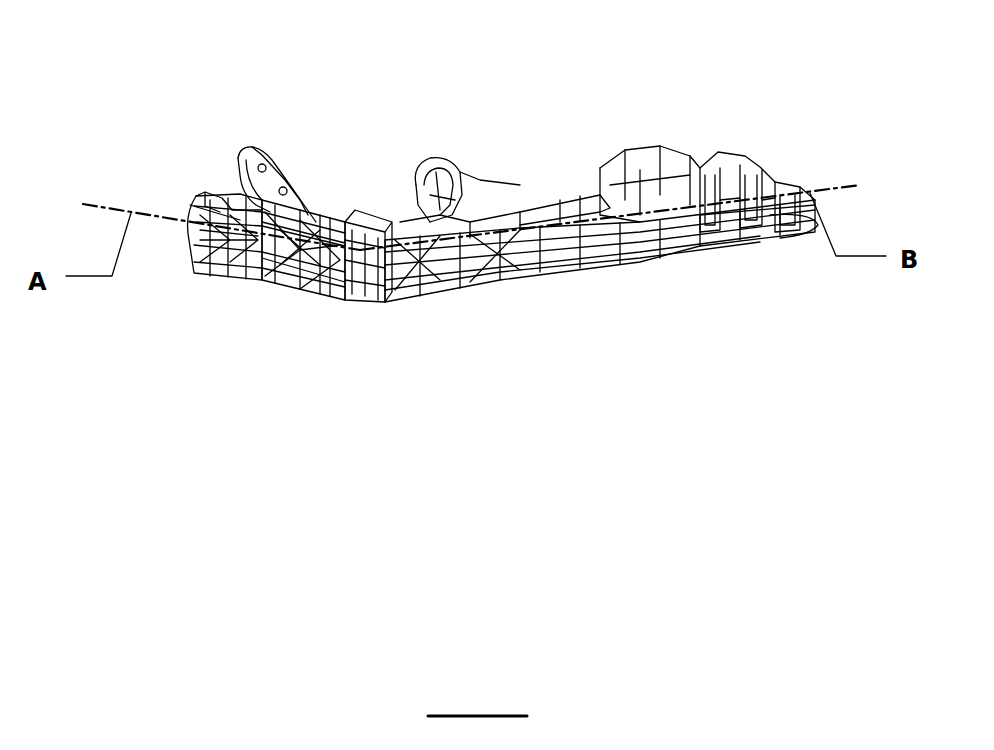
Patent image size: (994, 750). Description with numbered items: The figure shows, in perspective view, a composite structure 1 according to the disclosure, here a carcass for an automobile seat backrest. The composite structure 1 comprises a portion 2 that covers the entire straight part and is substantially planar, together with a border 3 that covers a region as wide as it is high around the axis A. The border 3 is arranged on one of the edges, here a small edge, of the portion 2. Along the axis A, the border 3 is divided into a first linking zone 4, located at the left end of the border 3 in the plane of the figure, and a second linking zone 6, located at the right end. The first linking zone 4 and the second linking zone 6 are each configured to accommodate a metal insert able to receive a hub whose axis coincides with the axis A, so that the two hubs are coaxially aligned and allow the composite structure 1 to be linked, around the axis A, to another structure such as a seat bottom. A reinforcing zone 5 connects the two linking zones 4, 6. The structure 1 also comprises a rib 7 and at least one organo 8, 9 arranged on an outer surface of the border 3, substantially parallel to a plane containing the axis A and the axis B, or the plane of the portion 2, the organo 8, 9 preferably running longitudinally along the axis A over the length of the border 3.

The composite structure 1 is at (436, 96).
The portion 2 is at (665, 243).
The border 3 is at (266, 275).
The first linking zone 4 is at (212, 207).
The reinforcing zone 5 is at (280, 228).
The second linking zone 6 is at (377, 257).
The rib 7 is at (288, 272).
The organo 8 is at (406, 182).
The organo 9 is at (292, 232).